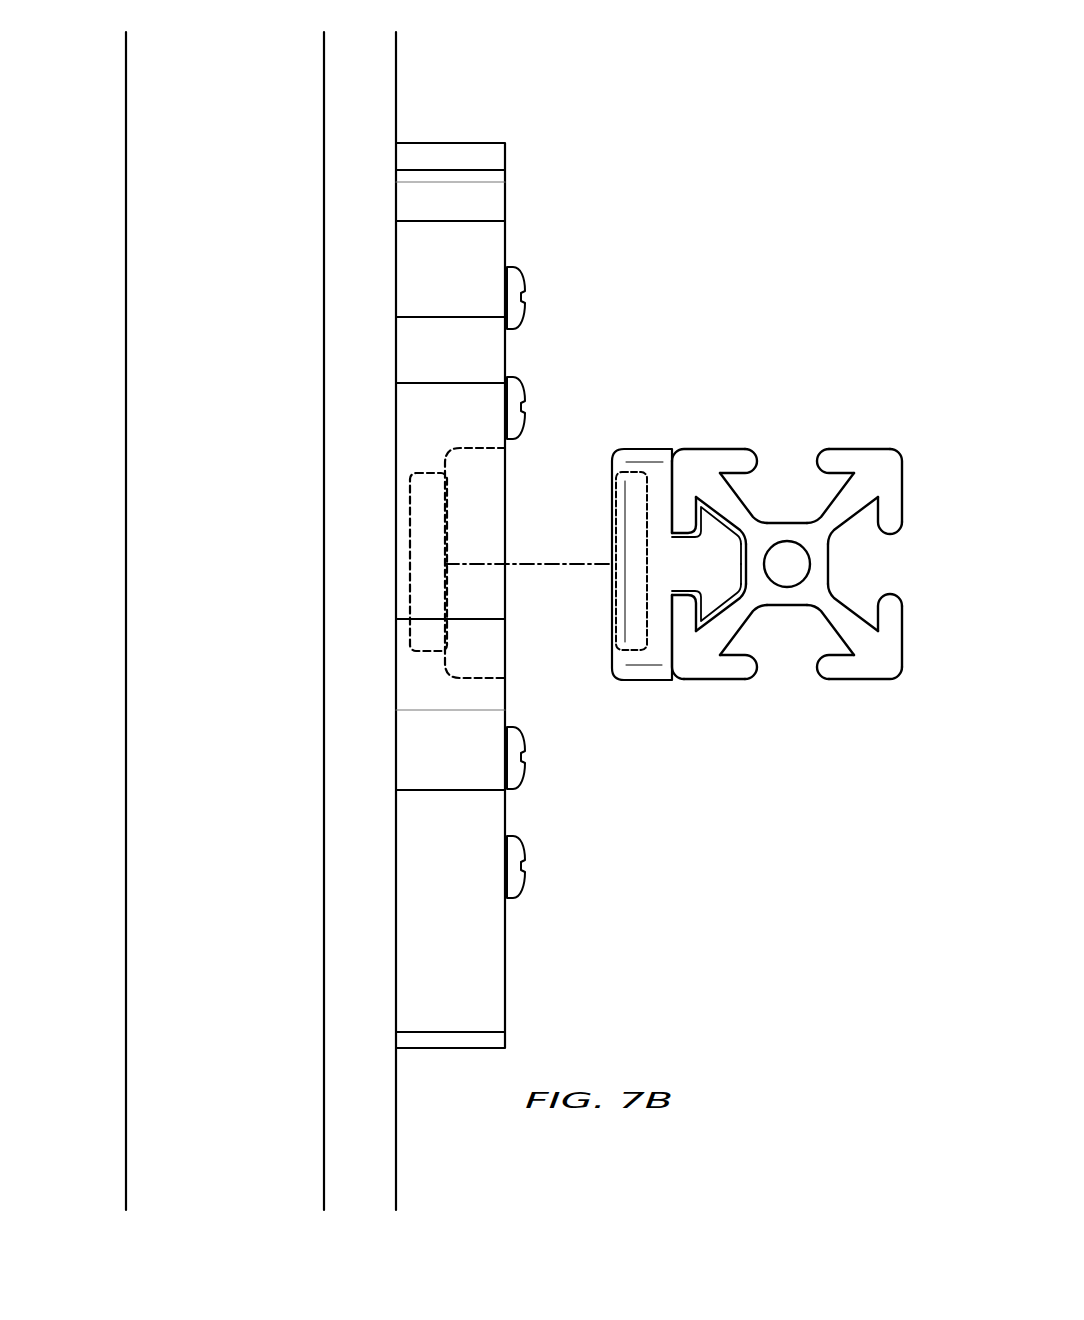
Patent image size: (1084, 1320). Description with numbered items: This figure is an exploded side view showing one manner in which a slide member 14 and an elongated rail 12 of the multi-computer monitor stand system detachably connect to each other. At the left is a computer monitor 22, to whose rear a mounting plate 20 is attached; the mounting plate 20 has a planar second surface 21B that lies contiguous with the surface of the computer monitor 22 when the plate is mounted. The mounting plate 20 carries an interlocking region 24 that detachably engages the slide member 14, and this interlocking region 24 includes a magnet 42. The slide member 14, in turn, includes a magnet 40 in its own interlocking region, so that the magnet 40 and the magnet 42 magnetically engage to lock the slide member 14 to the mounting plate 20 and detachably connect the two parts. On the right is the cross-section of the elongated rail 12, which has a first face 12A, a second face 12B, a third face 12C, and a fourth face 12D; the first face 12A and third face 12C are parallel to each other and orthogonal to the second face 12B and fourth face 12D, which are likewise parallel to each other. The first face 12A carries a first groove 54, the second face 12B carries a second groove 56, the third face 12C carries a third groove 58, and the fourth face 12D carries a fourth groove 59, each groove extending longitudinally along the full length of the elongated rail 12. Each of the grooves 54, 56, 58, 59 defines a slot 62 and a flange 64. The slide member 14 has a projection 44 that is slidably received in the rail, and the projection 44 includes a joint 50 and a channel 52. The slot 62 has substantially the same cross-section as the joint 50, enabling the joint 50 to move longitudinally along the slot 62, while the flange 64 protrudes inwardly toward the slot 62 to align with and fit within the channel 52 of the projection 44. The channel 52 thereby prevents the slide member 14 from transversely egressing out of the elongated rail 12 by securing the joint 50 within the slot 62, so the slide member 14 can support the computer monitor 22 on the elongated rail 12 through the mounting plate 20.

The elongated rail 12 is at (809, 531).
The first face 12A is at (682, 487).
The second face 12B is at (728, 448).
The third face 12C is at (904, 490).
The fourth face 12D is at (852, 678).
The slide member 14 is at (640, 518).
The mounting plate 20 is at (450, 152).
The second surface 21B is at (395, 257).
The computer monitor 22 is at (126, 342).
The interlocking region 24 is at (473, 443).
The magnet 40 is at (628, 449).
The magnet 42 is at (410, 518).
The projection 44 is at (640, 589).
The joint 50 is at (708, 577).
The channel 52 is at (747, 557).
The first groove 54 is at (750, 566).
The second groove 56 is at (786, 522).
The third groove 58 is at (829, 560).
The fourth groove 59 is at (787, 606).
The slot 62 is at (833, 502).
The flange 64 is at (830, 457).